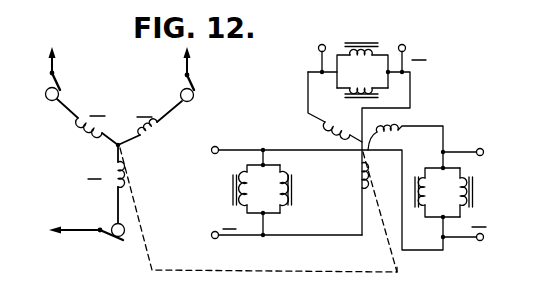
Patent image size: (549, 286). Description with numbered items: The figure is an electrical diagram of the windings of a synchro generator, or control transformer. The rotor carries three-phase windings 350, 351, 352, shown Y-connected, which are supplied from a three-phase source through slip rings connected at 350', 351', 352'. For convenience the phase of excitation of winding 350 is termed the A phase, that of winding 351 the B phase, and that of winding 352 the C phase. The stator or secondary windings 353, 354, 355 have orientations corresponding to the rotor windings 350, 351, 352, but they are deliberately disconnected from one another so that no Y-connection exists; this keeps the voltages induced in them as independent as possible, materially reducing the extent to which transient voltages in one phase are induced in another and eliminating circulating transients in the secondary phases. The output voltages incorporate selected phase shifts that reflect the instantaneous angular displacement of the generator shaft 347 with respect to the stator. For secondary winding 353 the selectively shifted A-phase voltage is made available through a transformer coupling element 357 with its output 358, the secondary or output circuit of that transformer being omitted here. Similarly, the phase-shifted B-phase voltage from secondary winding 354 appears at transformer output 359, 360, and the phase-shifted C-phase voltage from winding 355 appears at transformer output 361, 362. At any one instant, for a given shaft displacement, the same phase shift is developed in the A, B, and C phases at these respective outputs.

The generator shaft 347 is at (143, 231).
The rotor winding (A phase) 350 is at (84, 130).
The slip ring connection (A phase) 350' is at (78, 74).
The rotor winding (B phase) 351 is at (152, 133).
The slip ring connection (B phase) 351' is at (214, 74).
The rotor winding (C phase) 352 is at (98, 191).
The slip ring connection (C phase) 352' is at (86, 247).
The secondary winding (A phase) 353 is at (322, 125).
The secondary winding (B phase) 354 is at (393, 131).
The secondary winding (C phase) 355 is at (358, 184).
The transformer coupling element 357 is at (380, 90).
The transformer output (A phase) 358 is at (361, 43).
The transformer output (B phase) 359 is at (428, 192).
The transformer output (B phase) 360 is at (462, 200).
The transformer output (C phase) 361 is at (285, 206).
The transformer output (C phase) 362 is at (231, 197).
The A phase A is at (257, 78).
The B phase B is at (311, 162).
The C phase C is at (162, 194).